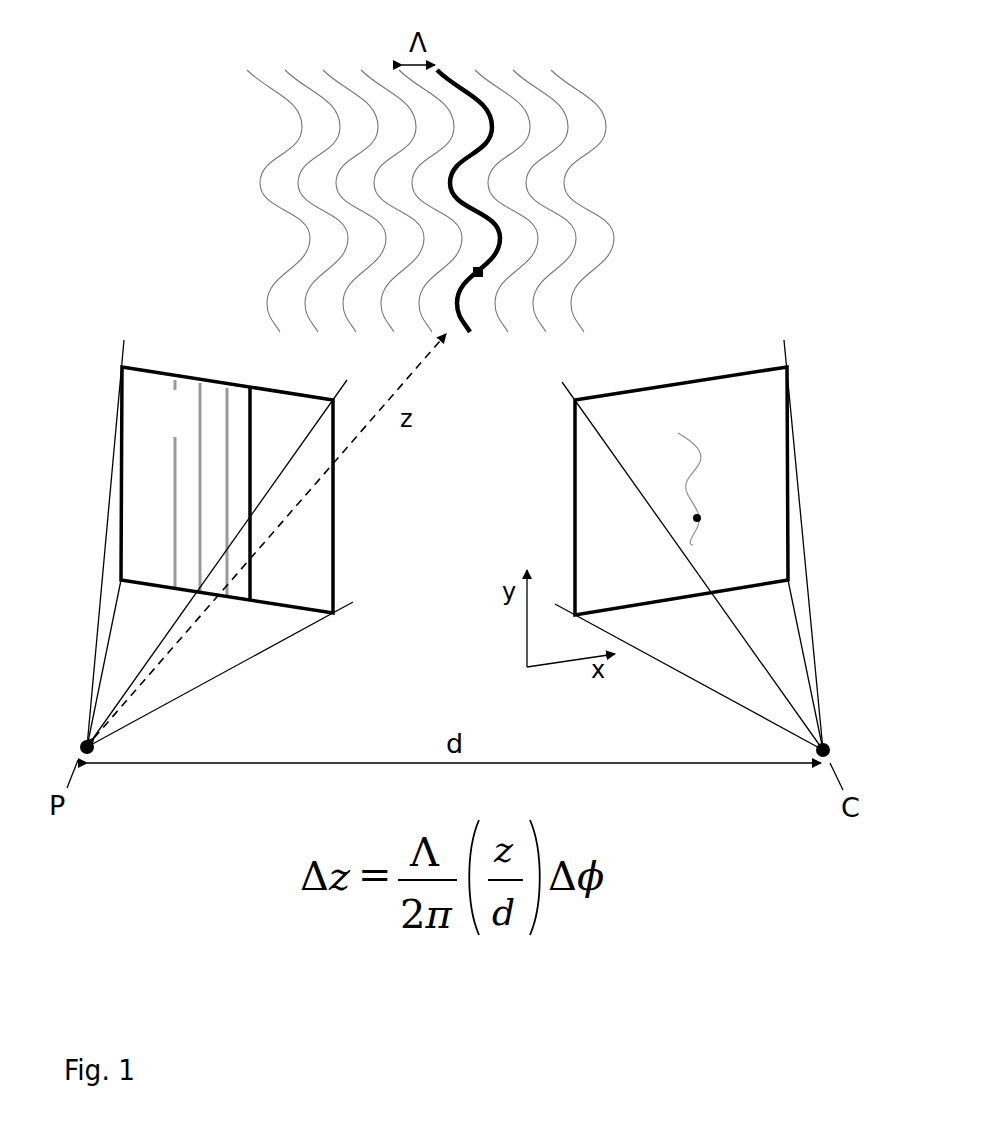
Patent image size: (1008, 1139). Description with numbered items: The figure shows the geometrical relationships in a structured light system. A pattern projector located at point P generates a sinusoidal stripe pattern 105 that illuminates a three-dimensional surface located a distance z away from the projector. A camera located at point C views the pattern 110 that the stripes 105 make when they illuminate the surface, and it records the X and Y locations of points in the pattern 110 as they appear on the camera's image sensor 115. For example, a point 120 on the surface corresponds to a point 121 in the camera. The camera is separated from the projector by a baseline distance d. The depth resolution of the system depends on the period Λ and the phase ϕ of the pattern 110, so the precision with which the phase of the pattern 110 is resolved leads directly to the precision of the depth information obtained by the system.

The sinusoidal stripe pattern 105 is at (185, 423).
The pattern 110 is at (355, 131).
The image sensor 115 is at (758, 426).
The point on the surface 120 is at (487, 283).
The point in the camera 121 is at (706, 522).